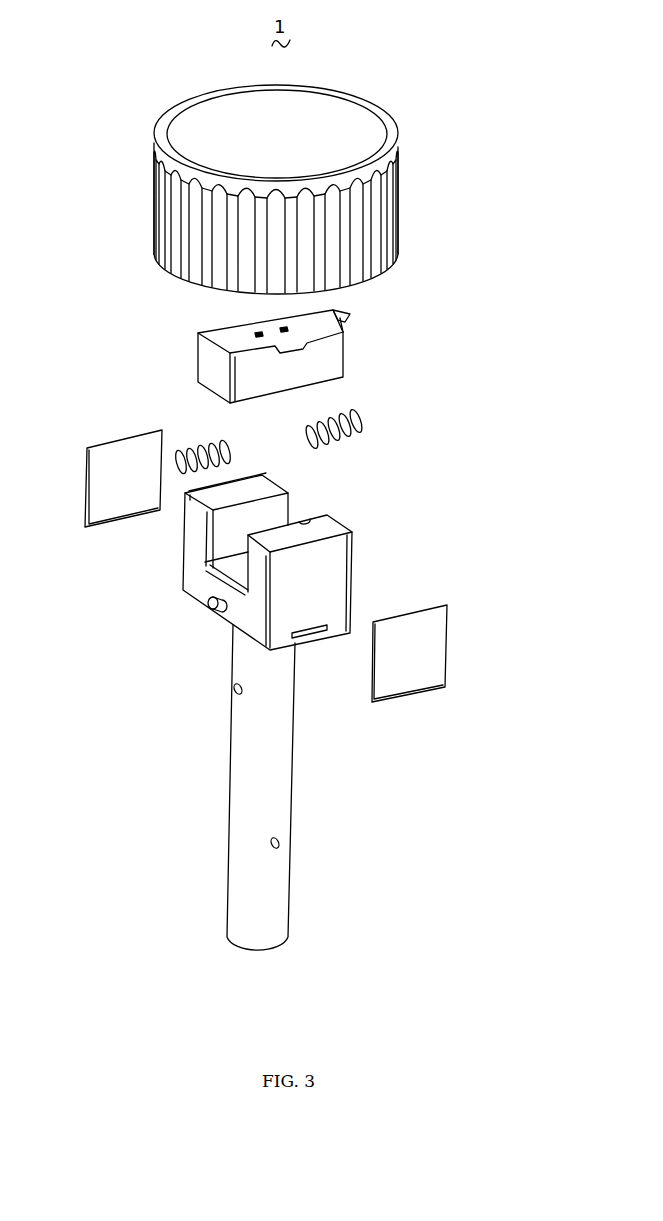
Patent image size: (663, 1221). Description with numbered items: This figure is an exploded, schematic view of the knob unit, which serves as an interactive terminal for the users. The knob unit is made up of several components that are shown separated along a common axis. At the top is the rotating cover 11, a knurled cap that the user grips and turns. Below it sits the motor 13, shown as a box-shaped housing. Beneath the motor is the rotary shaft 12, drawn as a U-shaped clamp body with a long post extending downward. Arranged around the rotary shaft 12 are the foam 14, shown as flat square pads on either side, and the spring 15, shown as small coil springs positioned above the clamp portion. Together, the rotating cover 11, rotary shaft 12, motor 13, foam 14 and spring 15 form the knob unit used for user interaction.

The rotating cover 11 is at (183, 212).
The rotary shaft 12 is at (265, 748).
The motor 13 is at (215, 372).
The foam 14 is at (430, 652).
The spring 15 is at (368, 425).